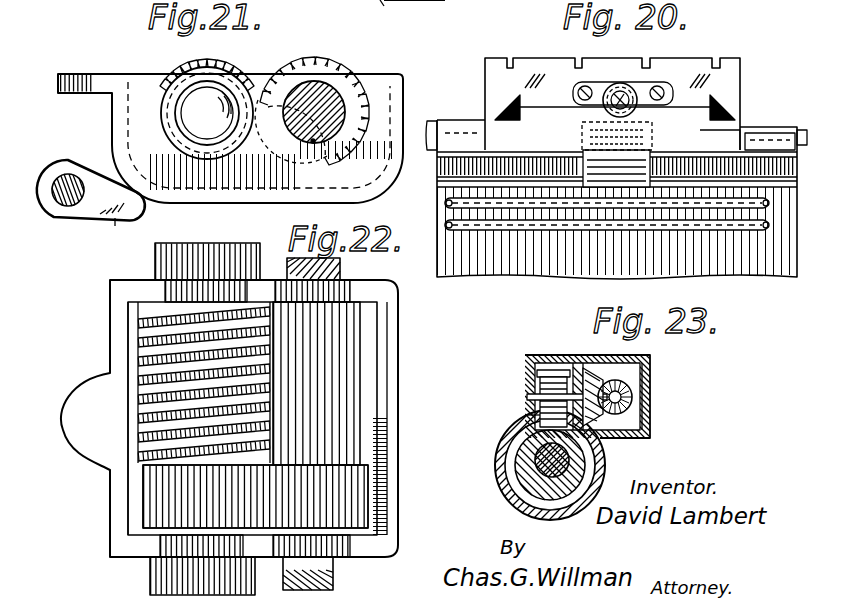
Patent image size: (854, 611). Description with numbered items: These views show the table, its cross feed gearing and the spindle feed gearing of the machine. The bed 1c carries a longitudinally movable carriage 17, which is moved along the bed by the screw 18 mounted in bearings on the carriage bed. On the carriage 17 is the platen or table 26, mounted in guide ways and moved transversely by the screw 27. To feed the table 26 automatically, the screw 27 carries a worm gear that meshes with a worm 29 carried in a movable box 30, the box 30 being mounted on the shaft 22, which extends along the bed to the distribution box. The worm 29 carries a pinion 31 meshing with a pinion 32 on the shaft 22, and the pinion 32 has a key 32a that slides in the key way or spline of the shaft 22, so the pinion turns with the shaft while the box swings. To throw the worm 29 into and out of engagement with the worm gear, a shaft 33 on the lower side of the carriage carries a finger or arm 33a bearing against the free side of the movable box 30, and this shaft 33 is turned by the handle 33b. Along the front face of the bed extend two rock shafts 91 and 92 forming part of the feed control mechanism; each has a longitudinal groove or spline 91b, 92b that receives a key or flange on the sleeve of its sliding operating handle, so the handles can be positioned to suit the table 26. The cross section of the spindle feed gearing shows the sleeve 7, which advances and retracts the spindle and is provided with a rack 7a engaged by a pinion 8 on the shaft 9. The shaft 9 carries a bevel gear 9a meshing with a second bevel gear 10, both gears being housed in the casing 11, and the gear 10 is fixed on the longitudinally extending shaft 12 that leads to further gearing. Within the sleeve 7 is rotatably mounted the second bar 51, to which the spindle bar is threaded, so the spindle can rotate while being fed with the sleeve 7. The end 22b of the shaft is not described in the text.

In FIG. 20, the bed 1c is at (446, 140).
In FIG. 23, the sleeve 7 is at (608, 487).
In FIG. 23, the rack 7a is at (532, 414).
In FIG. 23, the pinion 8 is at (537, 377).
In FIG. 23, the shaft 9 is at (530, 397).
In FIG. 23, the bevel gear 9a is at (590, 363).
In FIG. 23, the second bevel gear 10 is at (650, 388).
In FIG. 23, the casing or housing 11 is at (650, 412).
In FIG. 23, the longitudinally extending shaft 12 is at (616, 428).
In FIG. 20, the carriage 17 is at (725, 112).
In FIG. 20, the screw 18 is at (440, 178).
In FIG. 21, the shaft 22 is at (328, 101).
In FIG. 20, the shaft 22 is at (800, 129).
In FIG. 22, the shaft 22 is at (333, 576).
In FIG. 21, the shaft end 22b is at (413, 3).
In FIG. 20, the platen or table 26 is at (518, 76).
In FIG. 20, the screw 27 is at (620, 92).
In FIG. 21, the worm 29 is at (192, 66).
In FIG. 22, the worm 29 is at (145, 344).
In FIG. 21, the movable box 30 is at (130, 122).
In FIG. 22, the movable box 30 is at (124, 291).
In FIG. 21, the pinion 31 is at (168, 74).
In FIG. 22, the pinion 31 is at (150, 491).
In FIG. 21, the pinion 32 is at (340, 70).
In FIG. 22, the pinion 32 is at (360, 503).
In FIG. 21, the key 32a is at (313, 143).
In FIG. 21, the shaft 33 is at (68, 204).
In FIG. 21, the finger or arm 33a is at (120, 232).
In FIG. 21, the handle 33b is at (412, 12).
In FIG. 23, the second bar 51 is at (533, 462).
In FIG. 20, the rock shaft 91 is at (445, 203).
In FIG. 20, the longitudinal groove or spline 91b is at (768, 207).
In FIG. 20, the rock shaft 92 is at (445, 225).
In FIG. 20, the longitudinal groove or spline 92b is at (766, 229).